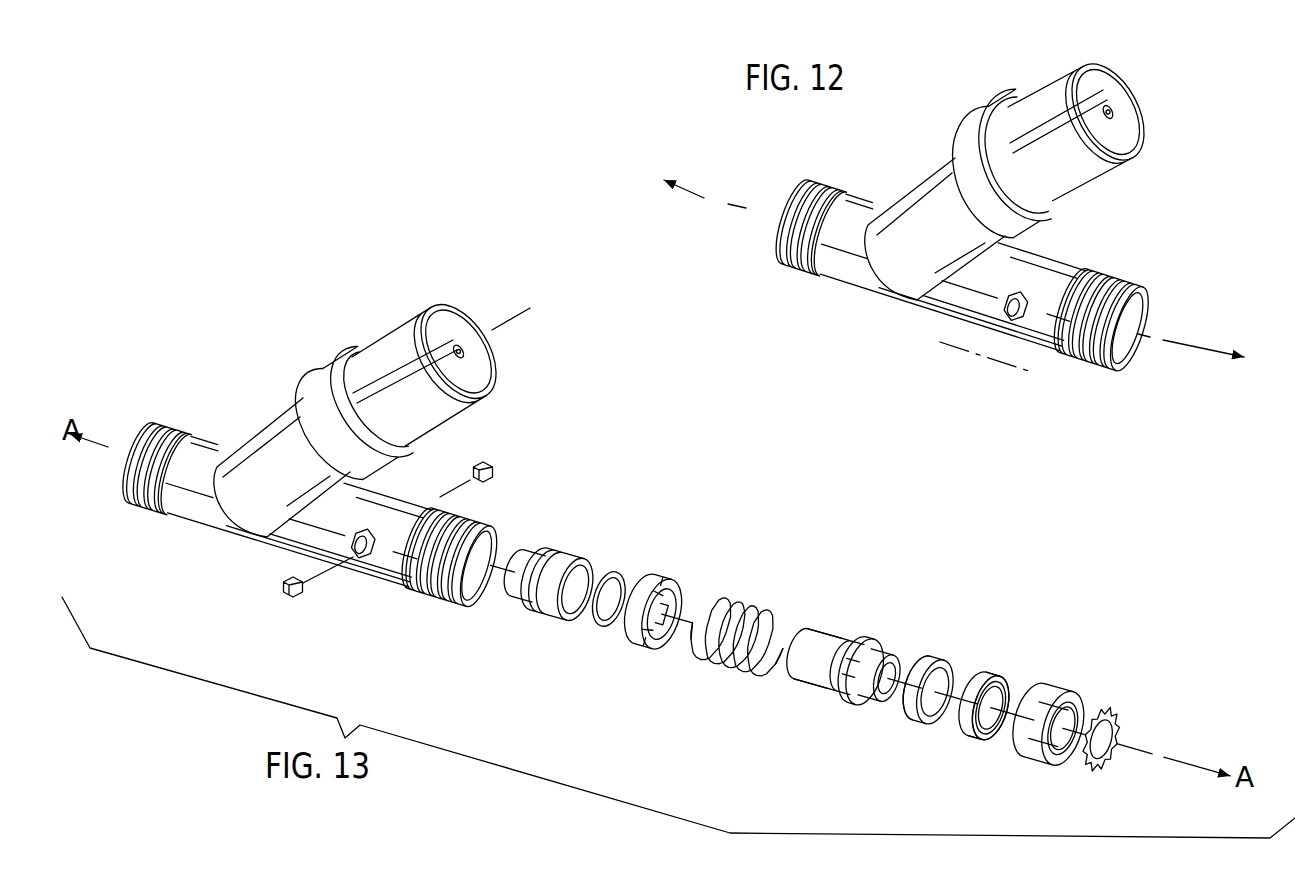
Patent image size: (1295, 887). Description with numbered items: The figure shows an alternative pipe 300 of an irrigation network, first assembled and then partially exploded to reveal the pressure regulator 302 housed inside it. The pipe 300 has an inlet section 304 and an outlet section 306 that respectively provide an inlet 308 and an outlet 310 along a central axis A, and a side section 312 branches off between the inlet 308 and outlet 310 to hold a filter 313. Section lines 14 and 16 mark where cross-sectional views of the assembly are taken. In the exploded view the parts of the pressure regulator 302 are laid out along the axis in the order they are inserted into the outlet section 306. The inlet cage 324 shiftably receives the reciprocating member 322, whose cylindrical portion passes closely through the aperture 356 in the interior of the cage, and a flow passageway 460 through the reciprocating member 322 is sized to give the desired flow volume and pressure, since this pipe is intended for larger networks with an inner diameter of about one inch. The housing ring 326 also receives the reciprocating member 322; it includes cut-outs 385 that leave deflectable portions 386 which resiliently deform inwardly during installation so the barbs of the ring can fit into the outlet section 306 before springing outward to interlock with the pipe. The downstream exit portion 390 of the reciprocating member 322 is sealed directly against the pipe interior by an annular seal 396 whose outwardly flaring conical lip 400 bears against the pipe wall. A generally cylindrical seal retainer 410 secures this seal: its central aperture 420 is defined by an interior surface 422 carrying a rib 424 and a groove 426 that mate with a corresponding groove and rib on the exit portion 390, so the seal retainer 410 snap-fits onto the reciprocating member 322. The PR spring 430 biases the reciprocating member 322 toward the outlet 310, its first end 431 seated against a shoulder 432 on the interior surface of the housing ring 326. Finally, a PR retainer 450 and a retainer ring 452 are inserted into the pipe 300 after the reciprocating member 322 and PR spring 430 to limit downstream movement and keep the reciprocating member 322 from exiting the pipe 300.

In FIG. 12, the section line 14- 14 is at (697, 205).
In FIG. 12, the section line 16- 16 is at (940, 342).
In FIG. 12, the pipe 300 is at (989, 233).
In FIG. 13, the pipe 300 is at (312, 469).
In FIG. 13, the pressure regulator 302 is at (1080, 591).
In FIG. 12, the inlet section 304 is at (807, 226).
In FIG. 13, the inlet section 304 is at (153, 467).
In FIG. 12, the outlet section 306 is at (1094, 318).
In FIG. 13, the outlet section 306 is at (443, 555).
In FIG. 12, the inlet 308 is at (989, 282).
In FIG. 13, the inlet 308 is at (308, 516).
In FIG. 12, the outlet 310 is at (1129, 329).
In FIG. 13, the outlet 310 is at (478, 566).
In FIG. 12, the side section 312 is at (906, 183).
In FIG. 13, the side section 312 is at (258, 423).
In FIG. 12, the filter 313 is at (1092, 188).
In FIG. 13, the filter 313 is at (386, 318).
In FIG. 13, the reciprocating member 322 is at (815, 617).
In FIG. 13, the inlet cage 324 is at (572, 542).
In FIG. 13, the housing ring 326 is at (657, 568).
In FIG. 13, the aperture 356 is at (803, 677).
In FIG. 13, the cut-outs 385 is at (685, 595).
In FIG. 13, the deflectable portions 386 is at (670, 648).
In FIG. 13, the exit portion 390 is at (878, 715).
In FIG. 13, the annular seal 396 is at (940, 646).
In FIG. 13, the conical lip 400 is at (932, 726).
In FIG. 13, the seal retainer 410 is at (988, 646).
In FIG. 13, the central aperture 420 is at (1010, 686).
In FIG. 13, the interior surface 422 is at (1000, 724).
In FIG. 13, the rib 424 is at (993, 731).
In FIG. 13, the groove 426 is at (1023, 738).
In FIG. 13, the PR spring 430 is at (755, 598).
In FIG. 13, the first end 431 is at (697, 640).
In FIG. 13, the shoulder 432 is at (777, 670).
In FIG. 13, the PR retainer 450 is at (1062, 686).
In FIG. 13, the retainer ring 452 is at (1130, 729).
In FIG. 13, the flow passageway 460 is at (902, 660).